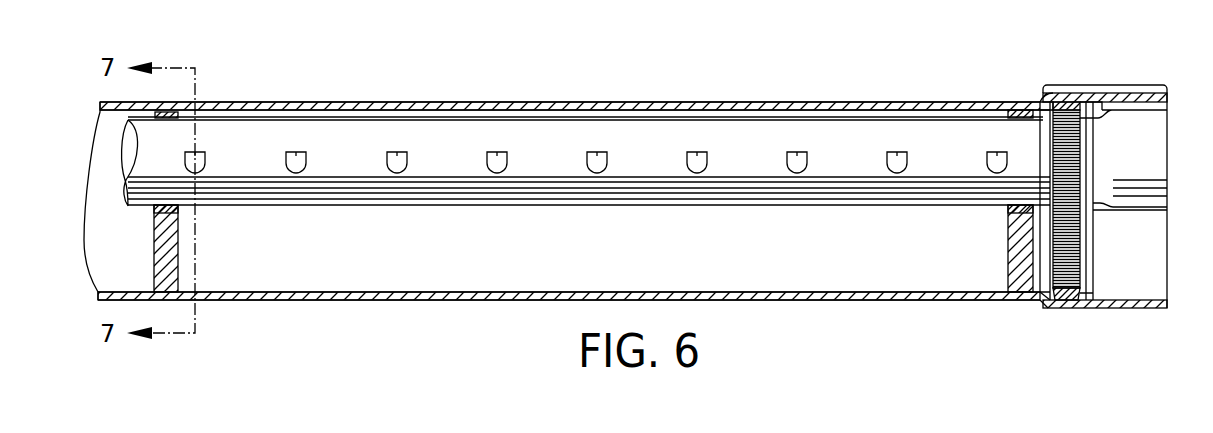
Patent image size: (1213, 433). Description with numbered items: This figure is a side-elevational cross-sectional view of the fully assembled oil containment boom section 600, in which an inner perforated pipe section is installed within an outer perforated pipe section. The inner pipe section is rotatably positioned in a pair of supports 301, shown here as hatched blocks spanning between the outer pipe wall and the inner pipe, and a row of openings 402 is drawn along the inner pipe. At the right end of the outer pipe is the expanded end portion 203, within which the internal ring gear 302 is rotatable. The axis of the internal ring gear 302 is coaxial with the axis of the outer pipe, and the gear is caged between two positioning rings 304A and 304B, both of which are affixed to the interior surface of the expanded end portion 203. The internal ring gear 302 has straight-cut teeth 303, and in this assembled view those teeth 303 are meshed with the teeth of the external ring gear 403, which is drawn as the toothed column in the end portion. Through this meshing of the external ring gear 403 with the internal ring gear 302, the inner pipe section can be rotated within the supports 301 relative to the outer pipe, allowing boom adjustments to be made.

The oil containment boom section 600 is at (716, 62).
The apertures 402 is at (308, 146).
The supports 301 is at (176, 292).
The expanded end portion 203 is at (1106, 87).
The external ring gear 403 is at (1088, 153).
The positioning ring 304A is at (1042, 303).
The internal ring gear 302 is at (1068, 306).
The positioning ring 304B is at (1087, 309).
The teeth 303 is at (1077, 215).